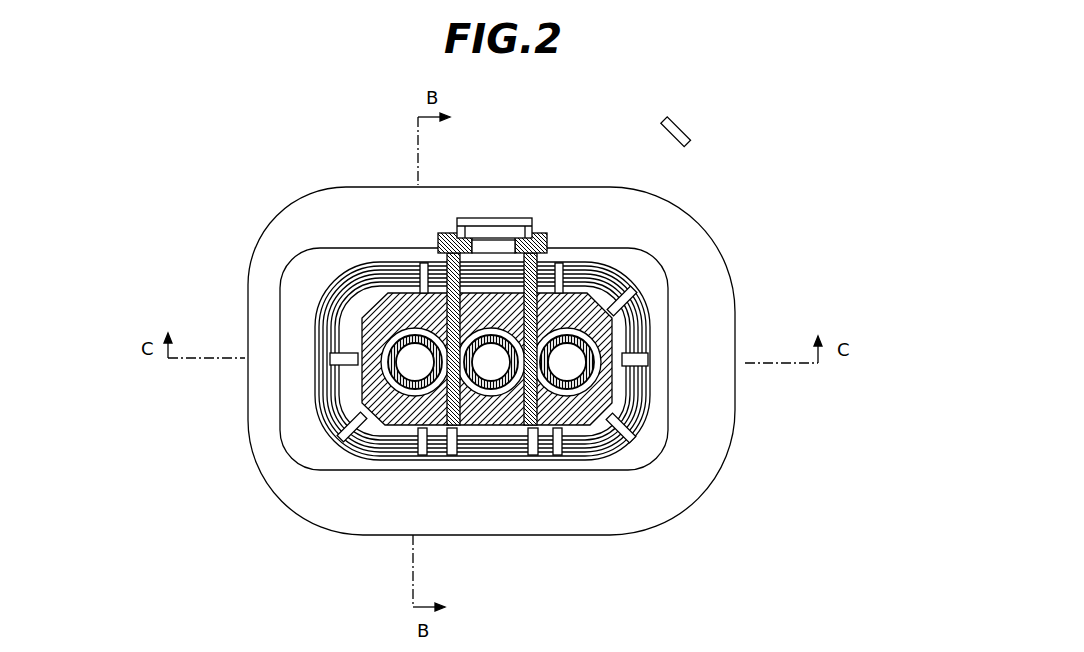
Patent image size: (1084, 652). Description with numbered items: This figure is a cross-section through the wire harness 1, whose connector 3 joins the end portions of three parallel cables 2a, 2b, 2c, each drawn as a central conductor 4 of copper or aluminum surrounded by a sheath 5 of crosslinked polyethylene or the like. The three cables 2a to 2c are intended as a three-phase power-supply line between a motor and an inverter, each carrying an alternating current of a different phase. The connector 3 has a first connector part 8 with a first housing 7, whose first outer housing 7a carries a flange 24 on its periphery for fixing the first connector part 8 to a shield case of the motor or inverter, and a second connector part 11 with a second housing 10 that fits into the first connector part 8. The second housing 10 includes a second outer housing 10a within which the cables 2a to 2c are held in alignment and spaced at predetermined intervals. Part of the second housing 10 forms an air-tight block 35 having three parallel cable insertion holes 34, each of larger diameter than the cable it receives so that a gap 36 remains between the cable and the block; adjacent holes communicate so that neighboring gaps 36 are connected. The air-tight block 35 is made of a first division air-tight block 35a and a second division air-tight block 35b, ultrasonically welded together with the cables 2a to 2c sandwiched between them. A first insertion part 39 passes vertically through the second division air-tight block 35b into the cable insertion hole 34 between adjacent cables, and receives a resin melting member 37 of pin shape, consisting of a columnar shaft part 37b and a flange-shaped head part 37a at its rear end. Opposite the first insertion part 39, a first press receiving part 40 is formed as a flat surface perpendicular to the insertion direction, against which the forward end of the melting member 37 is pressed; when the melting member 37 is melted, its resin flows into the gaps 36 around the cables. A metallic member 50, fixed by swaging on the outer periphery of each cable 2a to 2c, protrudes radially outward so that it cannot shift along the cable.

The wire harness 1 is at (779, 142).
The connector 3 is at (231, 188).
The first connector part 8 is at (304, 216).
The first housing 7 is at (257, 440).
The first outer housing 7a is at (283, 477).
The flange 24 is at (682, 503).
The second housing 10 is at (590, 468).
The second outer housing 10a is at (625, 468).
The cable 2a is at (340, 470).
The cable 2b is at (493, 397).
The cable 2c is at (625, 366).
The cable insertion hole 34 is at (645, 437).
The first press receiving part 40 is at (463, 378).
The air-tight block 35 is at (355, 312).
The first division air-tight block 35a is at (335, 381).
The second division air-tight block 35b is at (352, 330).
The gap 36 is at (395, 455).
The melting member 37 is at (456, 234).
The head part 37a is at (548, 240).
The shaft part 37b is at (537, 420).
The first insertion part 39 is at (430, 263).
The metallic member 50 is at (600, 272).
The second connector part 11 is at (650, 262).
The central conductor 4 is at (635, 303).
The sheath 5 is at (615, 333).